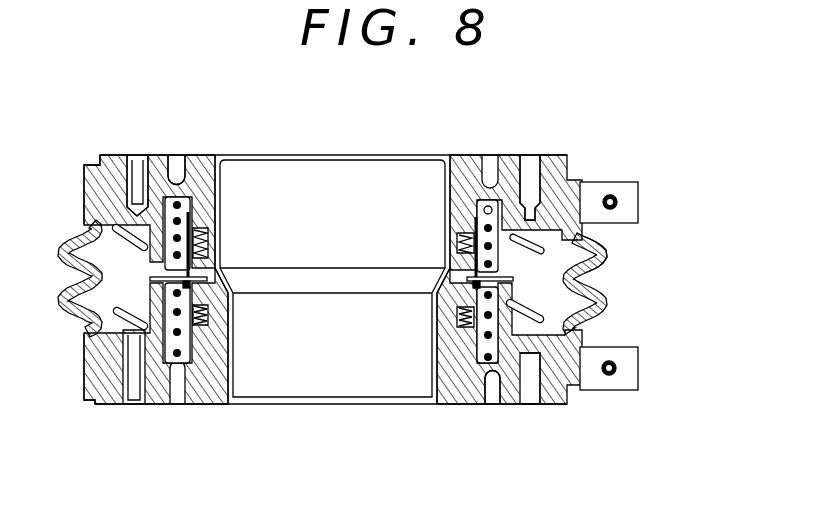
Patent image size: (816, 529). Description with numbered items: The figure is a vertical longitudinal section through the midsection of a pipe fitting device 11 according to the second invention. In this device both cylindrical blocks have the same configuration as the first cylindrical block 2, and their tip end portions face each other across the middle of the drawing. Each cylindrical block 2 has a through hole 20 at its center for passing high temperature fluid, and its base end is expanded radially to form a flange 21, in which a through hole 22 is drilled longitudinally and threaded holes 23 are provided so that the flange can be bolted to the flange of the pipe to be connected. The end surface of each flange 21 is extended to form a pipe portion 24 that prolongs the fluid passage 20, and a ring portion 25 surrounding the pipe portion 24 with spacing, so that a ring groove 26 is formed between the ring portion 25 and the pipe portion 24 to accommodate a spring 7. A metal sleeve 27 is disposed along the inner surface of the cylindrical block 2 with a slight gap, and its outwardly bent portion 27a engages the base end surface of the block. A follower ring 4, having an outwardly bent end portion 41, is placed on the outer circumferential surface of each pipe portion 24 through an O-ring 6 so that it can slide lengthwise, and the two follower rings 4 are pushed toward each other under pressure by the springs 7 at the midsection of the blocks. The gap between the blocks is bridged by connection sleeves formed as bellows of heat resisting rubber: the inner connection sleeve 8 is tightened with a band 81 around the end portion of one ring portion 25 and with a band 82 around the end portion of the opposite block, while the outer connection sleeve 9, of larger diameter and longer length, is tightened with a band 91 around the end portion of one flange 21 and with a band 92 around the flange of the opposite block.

The pipe fitting device 11 is at (463, 133).
The first cylindrical block 2 is at (478, 160).
The spring 7 is at (190, 168).
The through hole 20 is at (353, 165).
The bent portion 27a is at (452, 160).
The flange 21 is at (562, 162).
The through hole 22 is at (176, 156).
The threaded hole 23 is at (535, 160).
The ring portion 25 is at (220, 192).
The follower ring 4 is at (220, 220).
The pipe portion 24 is at (218, 237).
The ring groove 26 is at (450, 203).
The metal sleeve 27 is at (448, 240).
The O-ring 6 is at (440, 277).
The outwardly bent end portion 41 is at (74, 274).
The band 81 is at (72, 241).
The band 82 is at (80, 333).
The band 91 is at (82, 196).
The band 92 is at (80, 372).
The inner connection sleeve 8 is at (583, 283).
The outer connection sleeve 9 is at (603, 260).